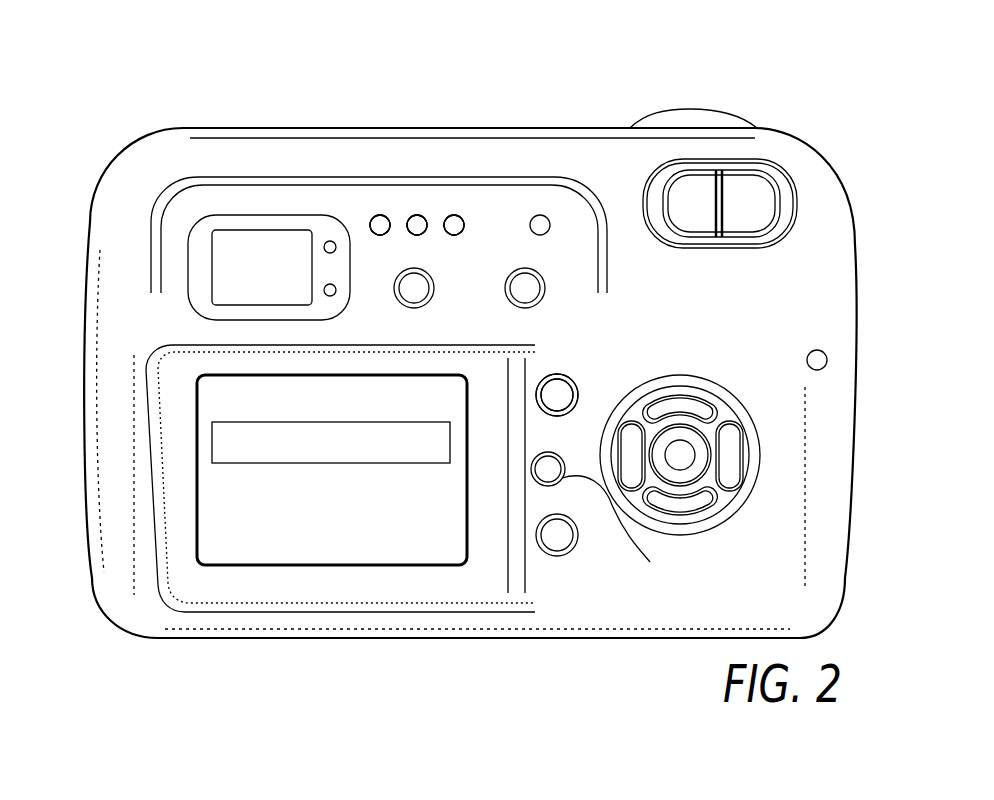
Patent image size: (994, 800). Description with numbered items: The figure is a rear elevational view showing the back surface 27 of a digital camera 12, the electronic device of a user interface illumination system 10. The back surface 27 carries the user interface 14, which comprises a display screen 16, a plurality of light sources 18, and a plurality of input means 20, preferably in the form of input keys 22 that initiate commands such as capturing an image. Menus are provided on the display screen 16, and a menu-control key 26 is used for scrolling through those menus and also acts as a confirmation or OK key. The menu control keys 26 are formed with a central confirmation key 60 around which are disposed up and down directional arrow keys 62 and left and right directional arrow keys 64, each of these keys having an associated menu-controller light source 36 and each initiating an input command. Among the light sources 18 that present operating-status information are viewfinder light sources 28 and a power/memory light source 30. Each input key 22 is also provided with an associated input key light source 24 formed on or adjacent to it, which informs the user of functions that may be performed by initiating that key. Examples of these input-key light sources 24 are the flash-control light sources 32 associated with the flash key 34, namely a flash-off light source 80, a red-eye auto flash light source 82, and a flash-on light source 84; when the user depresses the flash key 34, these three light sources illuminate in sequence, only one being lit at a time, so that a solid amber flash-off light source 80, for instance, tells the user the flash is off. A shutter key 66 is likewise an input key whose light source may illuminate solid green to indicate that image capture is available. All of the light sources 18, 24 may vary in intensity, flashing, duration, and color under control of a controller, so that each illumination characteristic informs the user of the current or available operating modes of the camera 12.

The user interface illumination system 10 is at (186, 97).
The digital camera 12 is at (152, 114).
The user interface 14 is at (178, 188).
The display screen 16 is at (232, 387).
The light sources 18 is at (519, 155).
The input means 20 is at (600, 304).
The input key 22 is at (543, 283).
The input key light source 24 is at (398, 150).
The menu-control key 26 is at (688, 452).
The back surface 27 is at (817, 200).
The viewfinder light sources 28 is at (330, 284).
The power/memory light source 30 is at (824, 352).
The flash-control light sources 32 is at (467, 212).
The flash key 34 is at (394, 288).
The menu-controller light source 36 is at (705, 406).
The confirmation key 60 is at (712, 475).
The up and down directional arrow keys 62 is at (705, 376).
The left and right directional arrow keys 64 is at (736, 491).
The shutter key 66 is at (715, 118).
The flash-off light source 80 is at (372, 217).
The red-eye auto flash light source 82 is at (462, 222).
The flash-on light source 84 is at (419, 235).